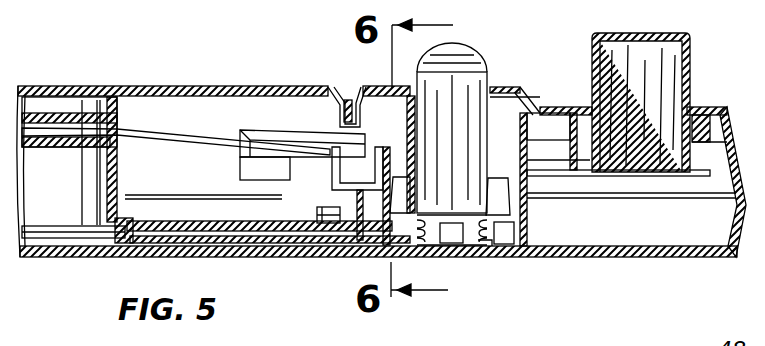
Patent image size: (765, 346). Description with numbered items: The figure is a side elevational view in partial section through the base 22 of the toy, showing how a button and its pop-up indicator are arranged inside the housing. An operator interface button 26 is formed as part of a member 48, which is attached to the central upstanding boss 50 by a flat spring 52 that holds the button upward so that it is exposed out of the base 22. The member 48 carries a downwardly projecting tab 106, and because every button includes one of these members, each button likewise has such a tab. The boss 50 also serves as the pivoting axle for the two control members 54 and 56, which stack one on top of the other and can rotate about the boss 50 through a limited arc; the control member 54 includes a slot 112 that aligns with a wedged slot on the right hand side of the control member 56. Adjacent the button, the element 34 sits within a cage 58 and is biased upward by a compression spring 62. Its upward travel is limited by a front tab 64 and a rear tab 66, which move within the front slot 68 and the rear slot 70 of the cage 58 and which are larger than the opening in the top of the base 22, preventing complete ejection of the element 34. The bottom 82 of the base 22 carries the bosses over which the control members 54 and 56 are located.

The base 22 is at (97, 260).
The operator interface button 26 is at (688, 48).
The element 34 is at (462, 52).
The member 48 is at (347, 88).
The central upstanding boss 50 is at (122, 113).
The flat spring 52 is at (182, 137).
The control member 54 is at (150, 225).
The control member 56 is at (170, 237).
The cage 58 is at (525, 110).
The compression spring 62 is at (488, 243).
The front tab 64 is at (395, 213).
The rear tab 66 is at (500, 203).
The front slot 68 is at (500, 238).
The rear slot 70 is at (412, 256).
The bottom 82 is at (20, 255).
The downwardly projecting tab 106 is at (330, 182).
The slot 112 is at (340, 210).